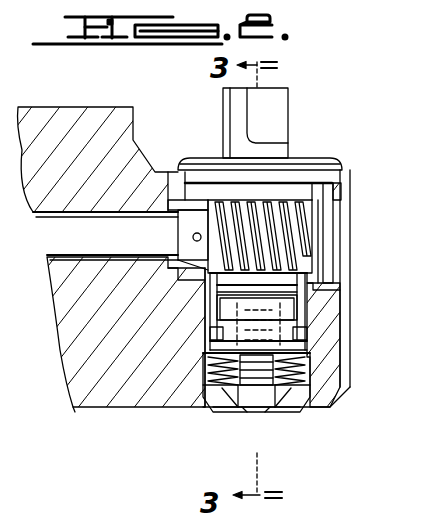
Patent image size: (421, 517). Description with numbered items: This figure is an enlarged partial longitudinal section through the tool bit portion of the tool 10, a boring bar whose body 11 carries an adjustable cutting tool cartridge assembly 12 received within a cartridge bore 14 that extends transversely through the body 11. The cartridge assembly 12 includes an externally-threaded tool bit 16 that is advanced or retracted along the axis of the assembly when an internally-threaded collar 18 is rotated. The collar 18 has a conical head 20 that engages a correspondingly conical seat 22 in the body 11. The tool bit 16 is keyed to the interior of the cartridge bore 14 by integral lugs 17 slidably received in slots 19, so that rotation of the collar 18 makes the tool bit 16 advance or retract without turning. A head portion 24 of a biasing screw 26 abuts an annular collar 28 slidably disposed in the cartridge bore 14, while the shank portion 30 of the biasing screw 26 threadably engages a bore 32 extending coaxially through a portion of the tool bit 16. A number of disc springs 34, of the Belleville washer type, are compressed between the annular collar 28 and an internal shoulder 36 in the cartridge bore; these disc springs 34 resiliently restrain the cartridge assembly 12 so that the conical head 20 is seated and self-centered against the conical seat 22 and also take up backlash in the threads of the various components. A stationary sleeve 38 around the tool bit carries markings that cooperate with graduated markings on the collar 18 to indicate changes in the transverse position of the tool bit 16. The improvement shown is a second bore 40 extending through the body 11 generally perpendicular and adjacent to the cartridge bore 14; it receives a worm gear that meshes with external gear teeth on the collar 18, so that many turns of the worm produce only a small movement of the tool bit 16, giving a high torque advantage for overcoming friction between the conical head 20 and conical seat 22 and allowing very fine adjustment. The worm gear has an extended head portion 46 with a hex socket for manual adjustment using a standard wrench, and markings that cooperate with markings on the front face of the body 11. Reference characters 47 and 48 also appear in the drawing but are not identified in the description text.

The tool 10 is at (358, 513).
The body 11 is at (72, 409).
The adjustable cutting tool cartridge assembly 12 is at (340, 152).
The cartridge bore 14 is at (307, 307).
The tool bit 16 is at (281, 108).
The lugs 17 is at (205, 338).
The collar 18 is at (198, 188).
The slots 19 is at (190, 263).
The conical head 20 is at (343, 185).
The conical seat 22 is at (197, 155).
The head portion 24 is at (233, 412).
The biasing screw 26 is at (247, 412).
The annular collar 28 is at (284, 413).
The shank portion 30 is at (262, 412).
The bore 32 is at (210, 318).
The disc springs 34 is at (297, 372).
The internal shoulder 36 is at (205, 353).
The stationary sleeve 38 is at (303, 157).
The second bore 40 is at (210, 270).
The extended head portion 46 is at (323, 222).
The nut 47 is at (330, 258).
The washer 48 is at (340, 295).